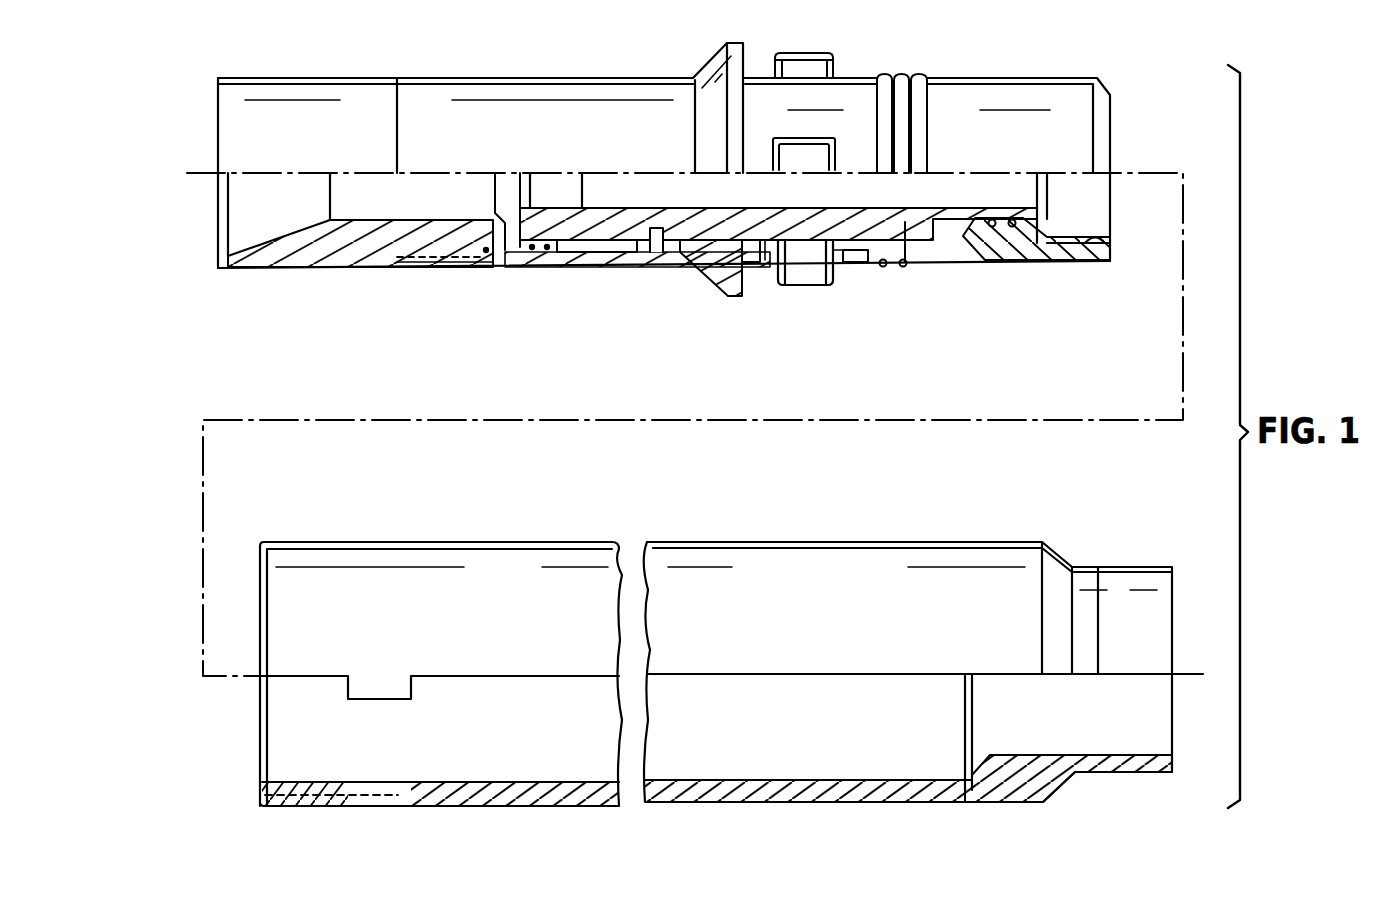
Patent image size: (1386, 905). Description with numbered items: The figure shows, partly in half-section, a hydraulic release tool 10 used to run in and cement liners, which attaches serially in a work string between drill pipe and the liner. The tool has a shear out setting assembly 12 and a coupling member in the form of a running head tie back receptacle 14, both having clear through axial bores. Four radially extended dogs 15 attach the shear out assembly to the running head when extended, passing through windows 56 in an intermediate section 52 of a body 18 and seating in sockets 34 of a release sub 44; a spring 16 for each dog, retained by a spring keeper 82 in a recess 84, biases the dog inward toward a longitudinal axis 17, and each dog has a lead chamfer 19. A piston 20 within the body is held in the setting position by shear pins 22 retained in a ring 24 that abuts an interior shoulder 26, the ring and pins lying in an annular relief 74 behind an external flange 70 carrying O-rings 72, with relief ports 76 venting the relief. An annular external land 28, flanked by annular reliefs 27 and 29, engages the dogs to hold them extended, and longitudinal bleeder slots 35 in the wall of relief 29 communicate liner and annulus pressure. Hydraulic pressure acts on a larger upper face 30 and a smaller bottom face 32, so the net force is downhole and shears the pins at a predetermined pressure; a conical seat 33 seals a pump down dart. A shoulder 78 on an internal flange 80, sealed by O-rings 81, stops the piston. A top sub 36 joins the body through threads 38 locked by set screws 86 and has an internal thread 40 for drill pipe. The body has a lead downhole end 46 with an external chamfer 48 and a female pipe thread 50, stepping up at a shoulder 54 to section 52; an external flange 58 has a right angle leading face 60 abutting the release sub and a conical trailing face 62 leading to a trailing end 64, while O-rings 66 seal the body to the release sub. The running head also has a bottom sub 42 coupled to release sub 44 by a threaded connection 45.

The hydraulic release tool 10 is at (1270, 170).
The shear out setting assembly 12 is at (574, 56).
The running head tie back receptacle 14 is at (784, 556).
The dogs 15 is at (800, 63).
The spring 16 is at (860, 260).
The longitudinal axis 17 is at (197, 170).
The body 18 is at (964, 94).
The lead chamfer 19 is at (835, 262).
The piston 20 is at (566, 196).
The shear pins 22 is at (645, 238).
The ring 24 is at (647, 270).
The interior shoulder 26 is at (682, 252).
The annular relief 27 is at (718, 242).
The land 28 is at (813, 255).
The annular relief 29 is at (940, 242).
The upper face 30 is at (512, 238).
The bottom face 32 is at (1040, 208).
The conical seat 33 is at (526, 196).
The sockets 34 is at (402, 795).
The bleeder slots 35 is at (906, 225).
The top sub 36 is at (320, 78).
The threads 38 is at (403, 267).
The internal thread 40 is at (242, 214).
The bottom sub 42 is at (1155, 568).
The release sub 44 is at (505, 557).
The threaded connection 45 is at (988, 795).
The lead downhole end 46 is at (1020, 105).
The external chamfer 48 is at (1105, 92).
The female pipe thread 50 is at (1105, 244).
The section 52 is at (848, 87).
The shoulder 54 is at (925, 78).
The windows 56 is at (772, 242).
The external flange 58 is at (723, 52).
The leading face 60 is at (745, 40).
The conical trailing face 62 is at (695, 76).
The trailing end 64 is at (410, 97).
The O-rings 66 is at (902, 128).
The external flange 70 is at (482, 250).
The O-rings 72 is at (492, 255).
The annular relief 74 is at (577, 243).
The relief ports 76 is at (590, 268).
The shoulder 78 is at (966, 230).
The internal flange 80 is at (1062, 250).
The O-rings 81 is at (1025, 238).
The spring keeper 82 is at (762, 262).
The recess 84 is at (849, 262).
The set screws 86 is at (466, 268).